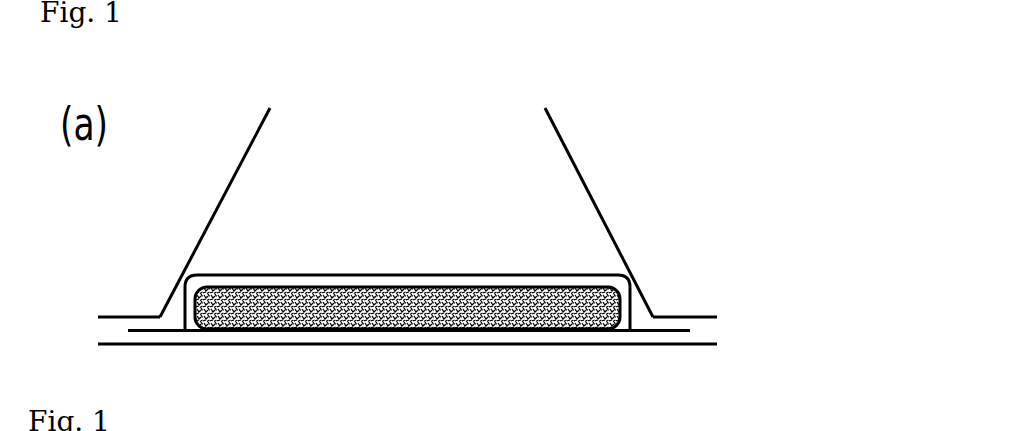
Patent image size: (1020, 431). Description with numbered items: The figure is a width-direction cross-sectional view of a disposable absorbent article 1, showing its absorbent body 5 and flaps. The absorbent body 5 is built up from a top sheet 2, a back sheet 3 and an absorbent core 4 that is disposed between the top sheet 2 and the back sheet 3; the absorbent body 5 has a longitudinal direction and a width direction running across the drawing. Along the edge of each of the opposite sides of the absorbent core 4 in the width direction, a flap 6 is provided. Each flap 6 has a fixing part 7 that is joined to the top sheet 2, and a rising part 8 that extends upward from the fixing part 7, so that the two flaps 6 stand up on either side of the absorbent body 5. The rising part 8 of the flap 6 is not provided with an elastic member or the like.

The disposable absorbent article 1 is at (637, 175).
The top sheet 2 is at (452, 274).
The back sheet 3 is at (458, 347).
The absorbent core 4 is at (321, 316).
The absorbent body 5 is at (320, 274).
The flap 6 is at (248, 153).
The fixing part 7 is at (139, 316).
The rising part 8 is at (222, 194).